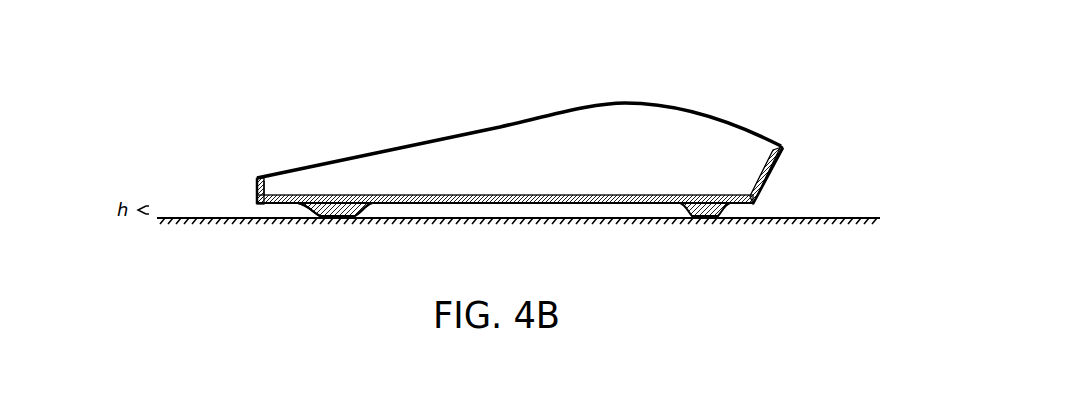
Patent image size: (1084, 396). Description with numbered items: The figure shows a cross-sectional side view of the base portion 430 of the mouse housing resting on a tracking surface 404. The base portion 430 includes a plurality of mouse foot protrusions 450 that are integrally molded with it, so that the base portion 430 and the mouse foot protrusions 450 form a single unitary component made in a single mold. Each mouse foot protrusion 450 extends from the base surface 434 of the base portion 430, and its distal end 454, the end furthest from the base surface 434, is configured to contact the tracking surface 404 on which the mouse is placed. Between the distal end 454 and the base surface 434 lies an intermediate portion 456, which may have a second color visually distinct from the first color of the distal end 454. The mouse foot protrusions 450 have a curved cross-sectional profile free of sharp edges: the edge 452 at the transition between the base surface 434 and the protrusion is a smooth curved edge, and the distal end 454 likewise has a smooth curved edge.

The base portion 430 is at (743, 93).
The tracking surface 404 is at (818, 217).
The base surface 434 is at (520, 200).
The mouse foot protrusions 450 is at (345, 217).
The edge 452 is at (310, 207).
The distal end 454 is at (331, 217).
The intermediate portion 456 is at (367, 216).